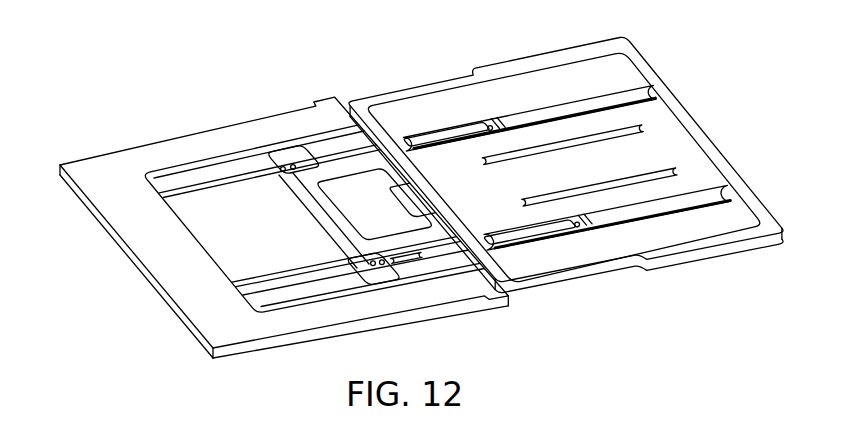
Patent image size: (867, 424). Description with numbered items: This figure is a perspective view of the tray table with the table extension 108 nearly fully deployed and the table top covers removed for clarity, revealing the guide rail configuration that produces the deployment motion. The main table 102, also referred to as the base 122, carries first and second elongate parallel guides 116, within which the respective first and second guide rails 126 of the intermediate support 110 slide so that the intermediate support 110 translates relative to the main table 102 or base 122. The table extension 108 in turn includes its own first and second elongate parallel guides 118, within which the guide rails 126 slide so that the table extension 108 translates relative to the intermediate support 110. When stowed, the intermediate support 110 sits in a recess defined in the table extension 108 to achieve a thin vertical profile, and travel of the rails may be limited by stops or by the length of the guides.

The main table 102 is at (123, 225).
The table extension 108 is at (697, 110).
The intermediate support 110 is at (306, 186).
The first and second elongate parallel guides 116 is at (190, 203).
The first and second elongate parallel guides 118 is at (637, 100).
The base 122 is at (180, 290).
The first and second guide rails 126 is at (380, 267).